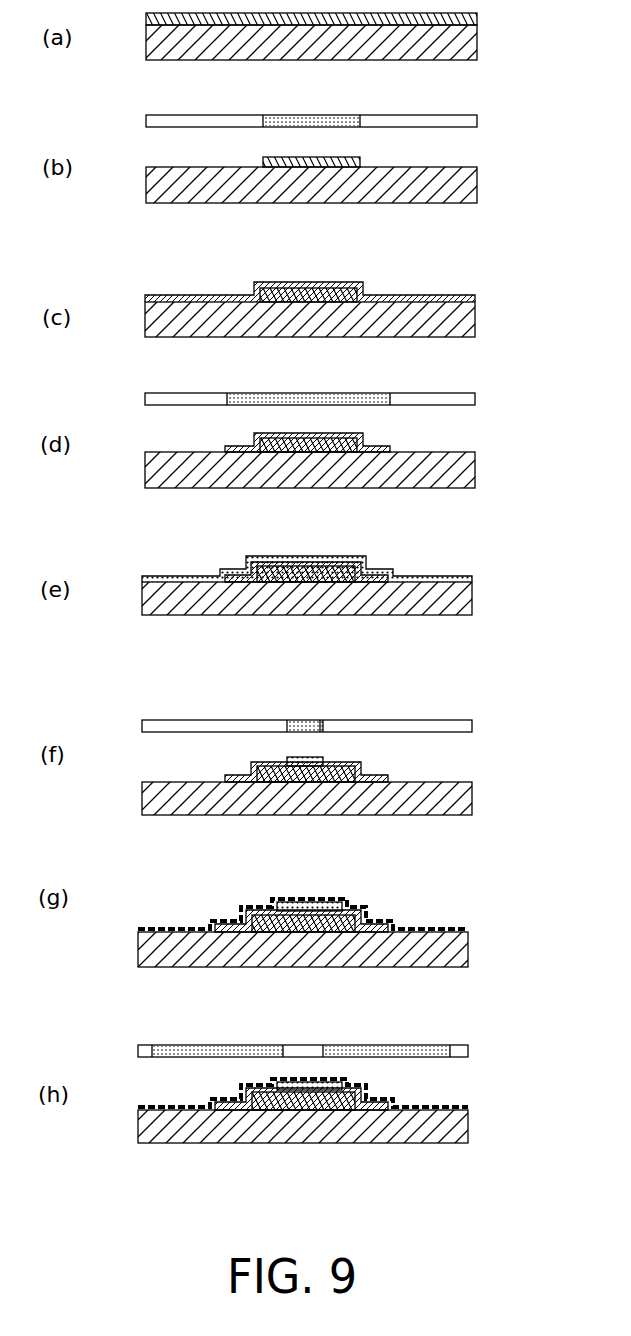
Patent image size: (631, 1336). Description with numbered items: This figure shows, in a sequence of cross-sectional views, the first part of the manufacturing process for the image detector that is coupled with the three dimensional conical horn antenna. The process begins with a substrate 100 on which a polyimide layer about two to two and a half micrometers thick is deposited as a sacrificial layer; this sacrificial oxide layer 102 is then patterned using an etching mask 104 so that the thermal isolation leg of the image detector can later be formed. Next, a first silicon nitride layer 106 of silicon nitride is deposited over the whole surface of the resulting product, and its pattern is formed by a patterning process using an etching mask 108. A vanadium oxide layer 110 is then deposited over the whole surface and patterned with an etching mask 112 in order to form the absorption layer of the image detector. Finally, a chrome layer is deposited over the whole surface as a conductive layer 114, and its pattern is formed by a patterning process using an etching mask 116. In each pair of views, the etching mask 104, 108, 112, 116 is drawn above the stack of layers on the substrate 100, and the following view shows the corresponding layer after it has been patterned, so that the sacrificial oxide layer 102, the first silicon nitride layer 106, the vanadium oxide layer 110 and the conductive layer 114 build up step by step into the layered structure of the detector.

The substrate 100 is at (477, 40).
The sacrificial oxide layer 102 is at (477, 18).
The etching mask 104 is at (477, 121).
The first silicon nitride layer 106 is at (222, 294).
The etching mask 108 is at (475, 399).
The vanadium oxide layer 110 is at (472, 578).
The etching mask 112 is at (472, 726).
The conductive layer 114 is at (468, 928).
The etching mask 116 is at (468, 1051).